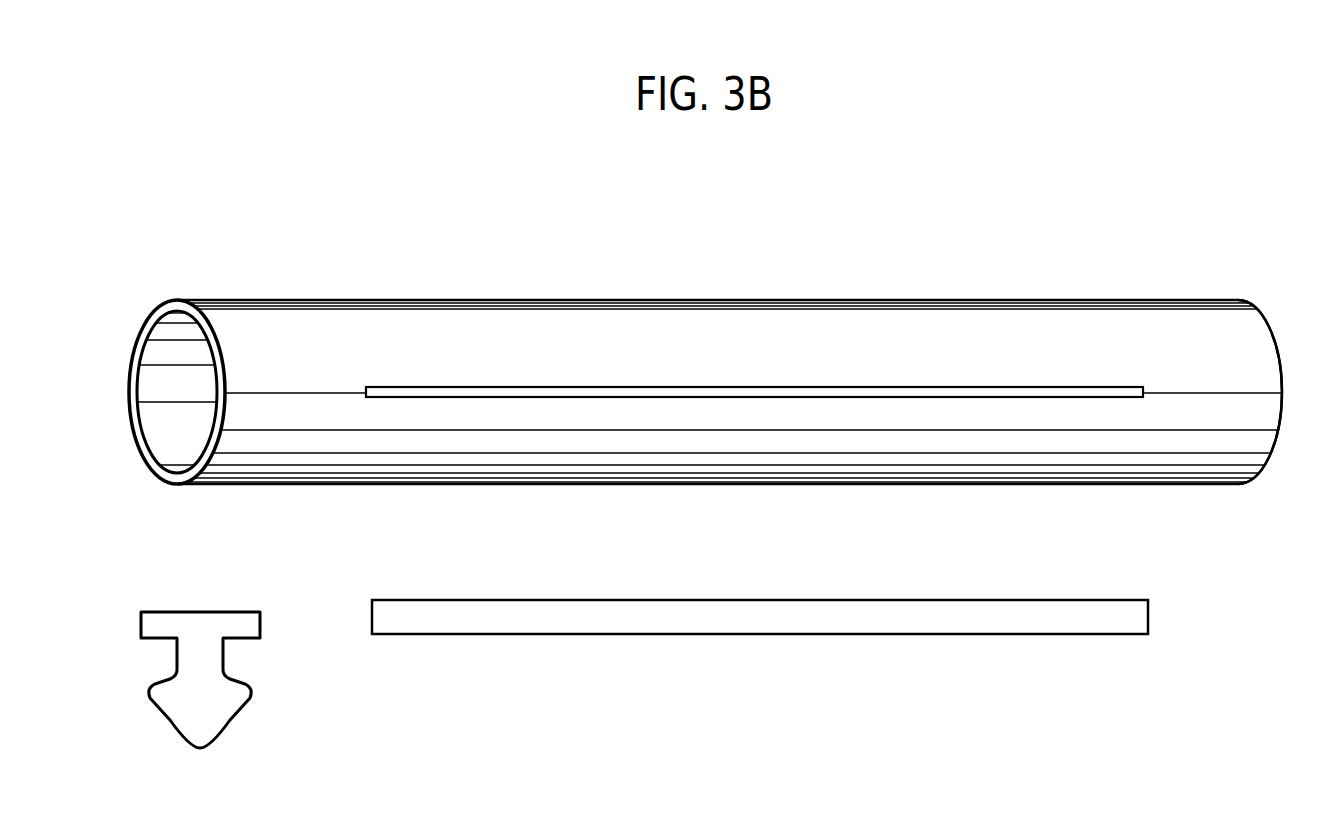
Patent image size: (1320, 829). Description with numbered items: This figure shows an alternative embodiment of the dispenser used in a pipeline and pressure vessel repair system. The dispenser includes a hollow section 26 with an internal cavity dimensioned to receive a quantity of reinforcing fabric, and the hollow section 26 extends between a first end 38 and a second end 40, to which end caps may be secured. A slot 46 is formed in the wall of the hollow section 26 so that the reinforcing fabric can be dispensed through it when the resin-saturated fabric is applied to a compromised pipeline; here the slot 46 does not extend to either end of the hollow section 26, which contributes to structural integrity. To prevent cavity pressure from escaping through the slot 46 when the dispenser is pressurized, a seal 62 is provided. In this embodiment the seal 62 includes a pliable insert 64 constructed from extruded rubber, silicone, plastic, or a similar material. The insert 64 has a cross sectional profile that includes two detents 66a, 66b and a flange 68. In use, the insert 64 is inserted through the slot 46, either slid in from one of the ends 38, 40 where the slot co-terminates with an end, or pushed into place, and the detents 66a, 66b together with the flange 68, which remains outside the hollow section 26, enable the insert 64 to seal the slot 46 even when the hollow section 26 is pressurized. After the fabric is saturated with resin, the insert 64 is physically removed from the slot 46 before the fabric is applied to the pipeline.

The hollow section 26 is at (328, 325).
The first end 38 is at (143, 397).
The second end 40 is at (1272, 335).
The slot 46 is at (563, 393).
The seal 62 is at (467, 590).
The pliable insert 64 is at (619, 646).
The detent 66a is at (170, 655).
The detent 66b is at (225, 655).
The flange 68 is at (160, 612).